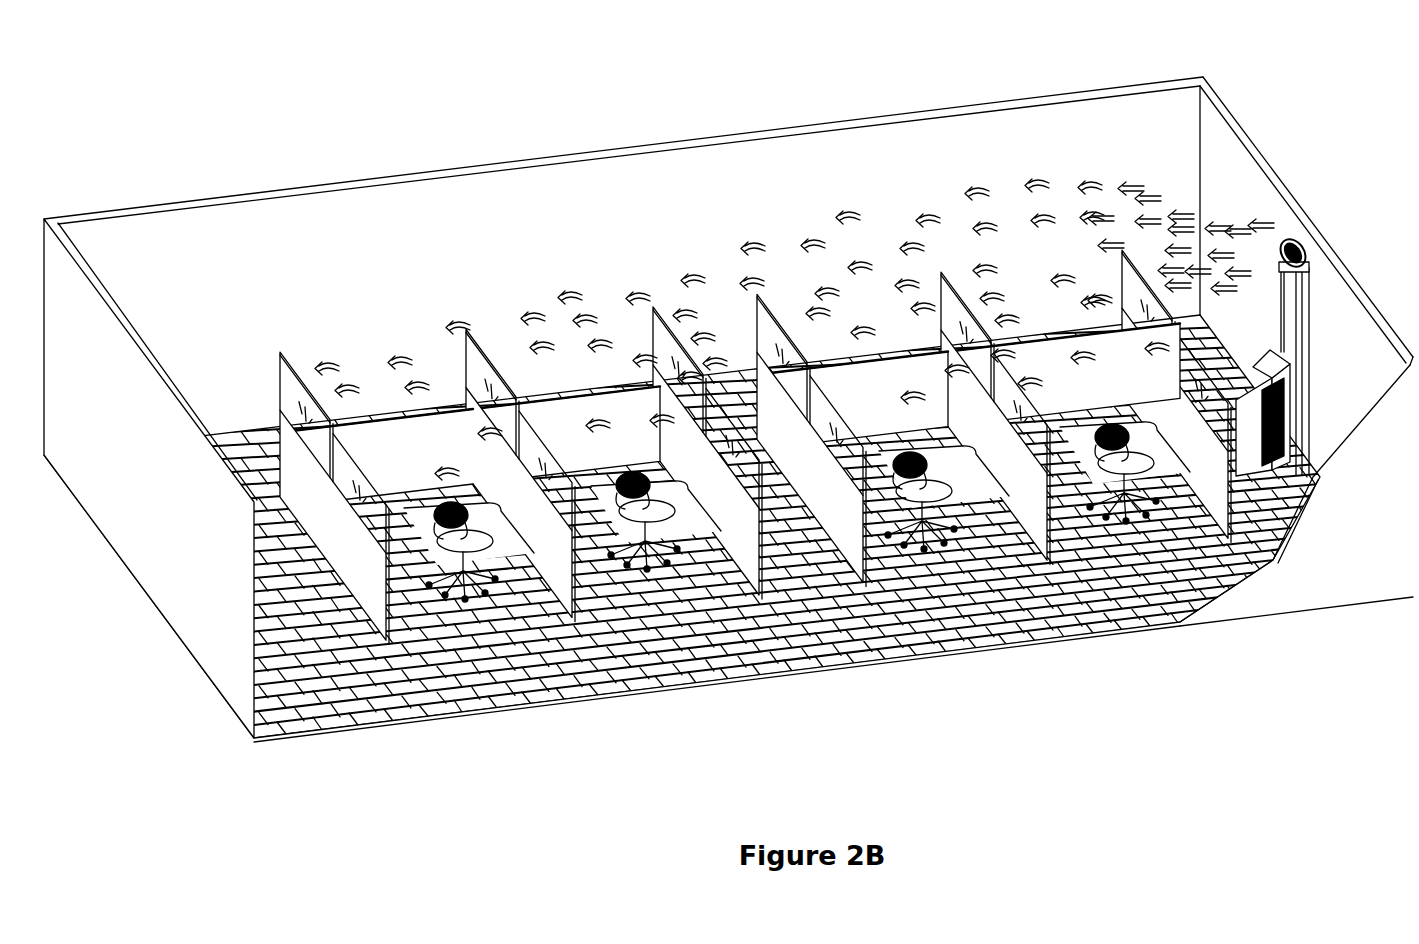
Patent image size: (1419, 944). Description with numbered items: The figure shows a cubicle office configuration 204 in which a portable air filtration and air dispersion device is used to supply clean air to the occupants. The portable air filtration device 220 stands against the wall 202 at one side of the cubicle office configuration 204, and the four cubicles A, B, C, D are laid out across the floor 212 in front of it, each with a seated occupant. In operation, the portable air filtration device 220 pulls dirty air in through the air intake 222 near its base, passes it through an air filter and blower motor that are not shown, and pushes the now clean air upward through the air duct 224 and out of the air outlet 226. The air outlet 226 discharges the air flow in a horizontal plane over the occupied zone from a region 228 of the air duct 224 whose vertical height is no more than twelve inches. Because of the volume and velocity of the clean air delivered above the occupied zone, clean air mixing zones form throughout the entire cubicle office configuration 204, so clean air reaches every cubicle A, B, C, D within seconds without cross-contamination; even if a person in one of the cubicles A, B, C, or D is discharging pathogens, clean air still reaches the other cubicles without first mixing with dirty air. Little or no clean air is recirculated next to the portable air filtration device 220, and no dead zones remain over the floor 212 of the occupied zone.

The cubicle office configuration 204 is at (672, 80).
The wall 202 is at (1320, 319).
The air outlet 226 is at (1290, 243).
The region of the air duct 228 is at (1300, 252).
The portable air filtration device 220 is at (1364, 334).
The air duct 224 is at (1287, 318).
The air intake 222 is at (1287, 443).
The floor 212 is at (1193, 575).
The cubicle A is at (1152, 430).
The cubicle B is at (966, 450).
The cubicle C is at (676, 486).
The cubicle D is at (490, 507).